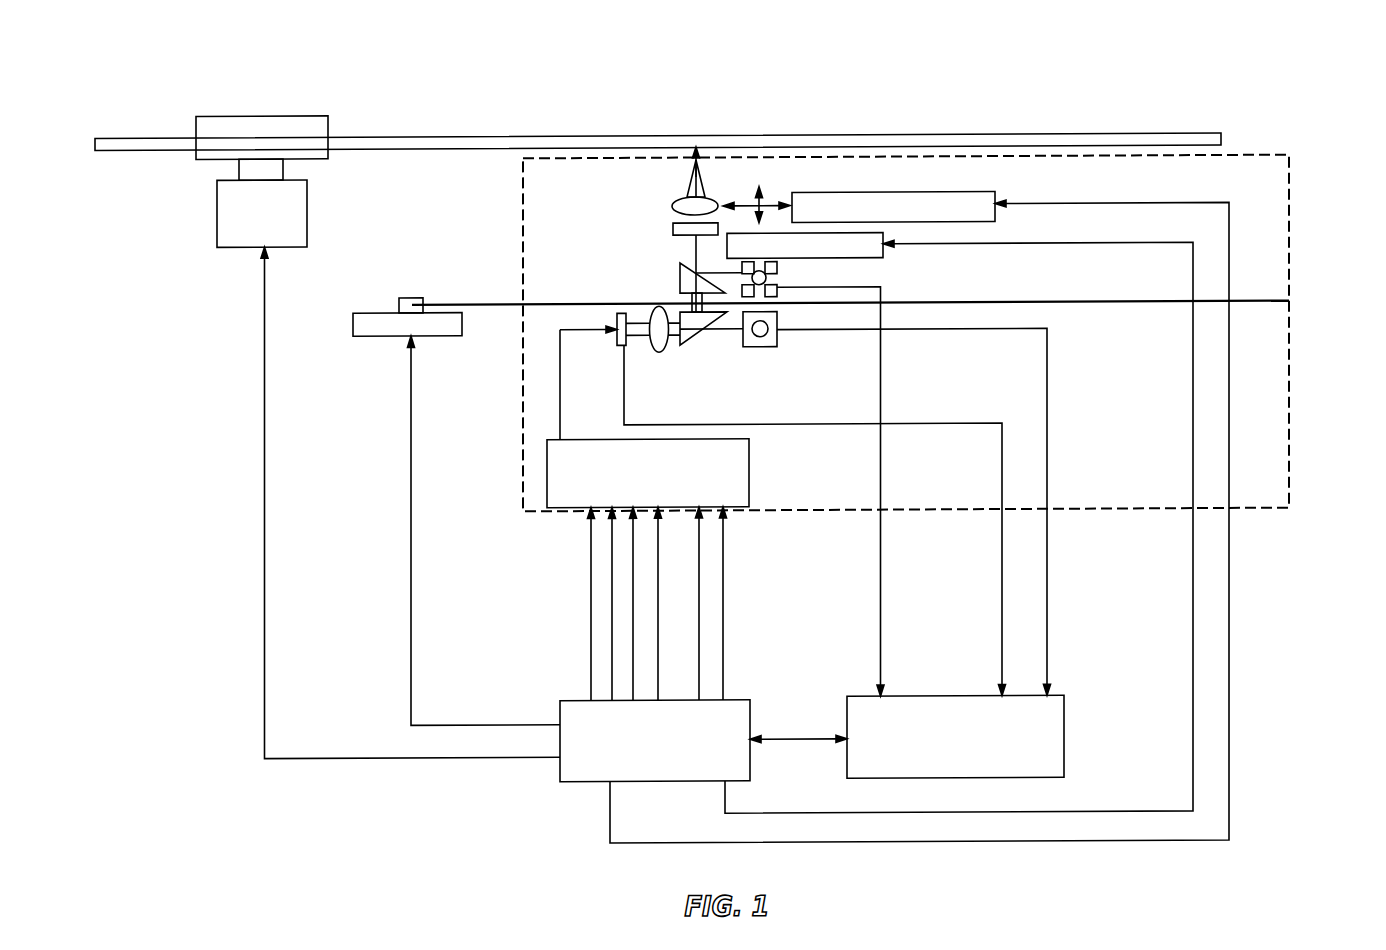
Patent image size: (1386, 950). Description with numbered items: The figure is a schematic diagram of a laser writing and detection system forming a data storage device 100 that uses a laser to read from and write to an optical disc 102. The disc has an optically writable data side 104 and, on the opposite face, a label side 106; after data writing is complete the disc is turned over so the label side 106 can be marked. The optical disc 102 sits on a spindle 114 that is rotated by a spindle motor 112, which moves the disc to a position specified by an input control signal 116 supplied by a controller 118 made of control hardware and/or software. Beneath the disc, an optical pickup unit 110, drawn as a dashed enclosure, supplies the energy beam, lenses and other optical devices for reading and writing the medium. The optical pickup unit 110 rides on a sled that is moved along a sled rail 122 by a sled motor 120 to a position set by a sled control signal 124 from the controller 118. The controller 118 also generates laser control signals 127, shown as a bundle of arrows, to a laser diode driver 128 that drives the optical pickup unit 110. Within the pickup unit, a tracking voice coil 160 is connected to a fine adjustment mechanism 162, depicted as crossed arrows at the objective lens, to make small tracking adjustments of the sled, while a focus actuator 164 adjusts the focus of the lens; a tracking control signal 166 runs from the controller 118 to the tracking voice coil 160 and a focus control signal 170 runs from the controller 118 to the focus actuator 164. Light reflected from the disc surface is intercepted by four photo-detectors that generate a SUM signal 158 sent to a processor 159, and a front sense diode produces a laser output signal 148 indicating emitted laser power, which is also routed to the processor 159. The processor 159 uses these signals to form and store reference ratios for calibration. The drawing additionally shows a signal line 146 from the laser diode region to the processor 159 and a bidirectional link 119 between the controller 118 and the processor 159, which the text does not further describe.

The data storage device 100 is at (500, 96).
The optical disc 102 is at (78, 136).
The optically writable data side 104 is at (137, 135).
The label side 106 is at (172, 148).
The optical pickup unit 110 is at (1289, 197).
The spindle motor 112 is at (217, 230).
The spindle 114 is at (265, 113).
The input control signal 116 is at (263, 320).
The controller 118 is at (752, 708).
The controller-processor bus 119 is at (802, 743).
The sled motor 120 is at (367, 336).
The sled rail 122 is at (497, 307).
The sled control signal 124 is at (410, 456).
The laser control signals 127 is at (575, 618).
The laser diode driver 128 is at (750, 473).
The laser diode monitor signal line 146 is at (1002, 552).
The laser output signal 148 is at (1048, 592).
The SUM signal 158 is at (880, 582).
The processor 159 is at (1065, 740).
The tracking voice coil 160 is at (873, 192).
The fine adjustment mechanism 162 is at (778, 188).
The focus actuator 164 is at (885, 256).
The tracking control signal 166 is at (1093, 205).
The focus control signal 170 is at (1063, 245).